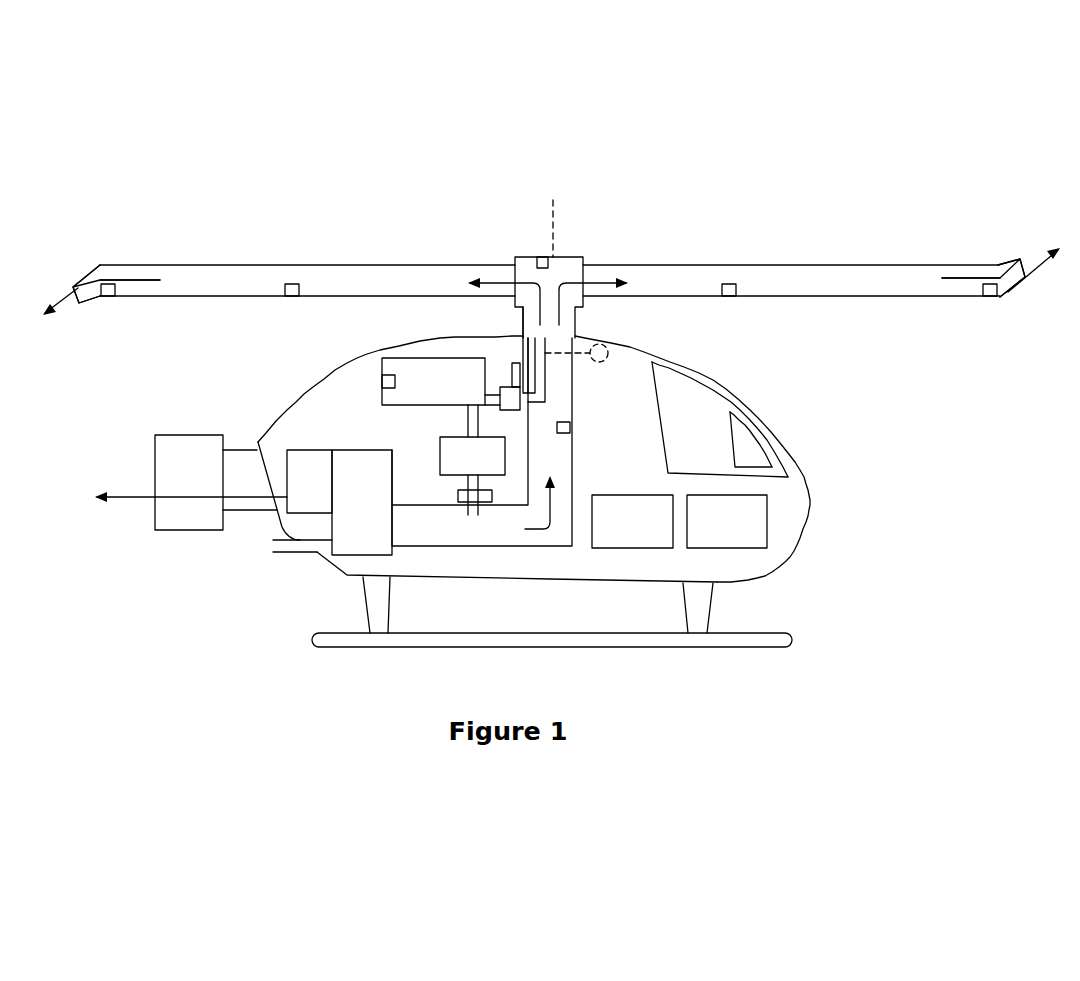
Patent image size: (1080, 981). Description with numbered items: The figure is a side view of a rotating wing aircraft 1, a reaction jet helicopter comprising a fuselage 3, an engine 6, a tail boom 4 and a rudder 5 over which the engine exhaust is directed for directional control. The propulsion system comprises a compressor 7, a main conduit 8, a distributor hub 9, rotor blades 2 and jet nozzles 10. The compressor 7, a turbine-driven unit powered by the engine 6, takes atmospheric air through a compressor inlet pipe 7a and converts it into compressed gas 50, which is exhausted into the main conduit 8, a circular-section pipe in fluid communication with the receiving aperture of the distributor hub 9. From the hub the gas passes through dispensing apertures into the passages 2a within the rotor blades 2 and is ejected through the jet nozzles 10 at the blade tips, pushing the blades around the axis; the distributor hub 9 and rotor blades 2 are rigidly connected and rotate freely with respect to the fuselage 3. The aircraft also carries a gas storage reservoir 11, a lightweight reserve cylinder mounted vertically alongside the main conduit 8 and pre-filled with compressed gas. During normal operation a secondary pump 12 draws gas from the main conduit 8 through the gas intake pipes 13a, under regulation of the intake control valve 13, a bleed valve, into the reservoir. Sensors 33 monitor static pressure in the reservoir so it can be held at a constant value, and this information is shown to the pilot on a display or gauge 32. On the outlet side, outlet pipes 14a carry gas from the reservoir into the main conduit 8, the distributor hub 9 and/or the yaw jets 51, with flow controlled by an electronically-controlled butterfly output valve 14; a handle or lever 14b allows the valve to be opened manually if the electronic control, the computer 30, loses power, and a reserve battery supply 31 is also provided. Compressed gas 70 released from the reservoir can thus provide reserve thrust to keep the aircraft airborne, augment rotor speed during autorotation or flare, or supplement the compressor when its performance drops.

The rotating wing aircraft 1 is at (200, 230).
The rotor blades 2 is at (382, 263).
The passages 2a is at (243, 275).
The fuselage 3 is at (812, 491).
The tail boom 4 is at (240, 448).
The rudder 5 is at (158, 531).
The engine 6 is at (309, 481).
The compressor 7 is at (362, 502).
The compressor inlet pipe 7a is at (292, 552).
The main conduit 8 is at (573, 487).
The distributor hub 9 is at (575, 255).
The jet nozzles 10 is at (78, 283).
The gas storage reservoir 11 is at (441, 381).
The secondary pump 12 is at (472, 456).
The intake control valve 13 is at (458, 494).
The gas intake channels or pipes 13a is at (465, 420).
The output valve 14 is at (503, 387).
The outlet pipes 14a is at (547, 388).
The handle or lever 14b is at (518, 363).
The computer 30 is at (632, 521).
The reserve battery supply 31 is at (727, 521).
The display or gauge 32 is at (747, 447).
The sensors 33 is at (110, 297).
The compressed gas 50 is at (524, 511).
The yaw jets 51 is at (600, 343).
The compressed gas 70 is at (387, 367).